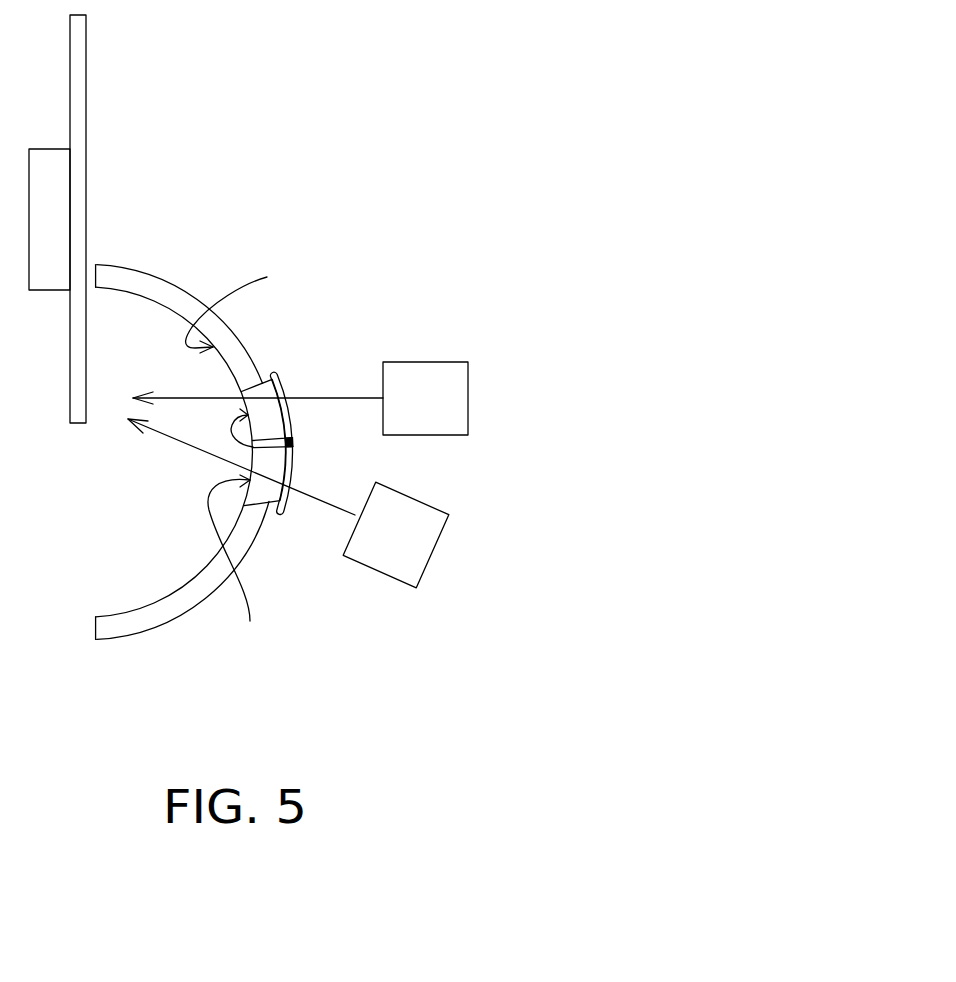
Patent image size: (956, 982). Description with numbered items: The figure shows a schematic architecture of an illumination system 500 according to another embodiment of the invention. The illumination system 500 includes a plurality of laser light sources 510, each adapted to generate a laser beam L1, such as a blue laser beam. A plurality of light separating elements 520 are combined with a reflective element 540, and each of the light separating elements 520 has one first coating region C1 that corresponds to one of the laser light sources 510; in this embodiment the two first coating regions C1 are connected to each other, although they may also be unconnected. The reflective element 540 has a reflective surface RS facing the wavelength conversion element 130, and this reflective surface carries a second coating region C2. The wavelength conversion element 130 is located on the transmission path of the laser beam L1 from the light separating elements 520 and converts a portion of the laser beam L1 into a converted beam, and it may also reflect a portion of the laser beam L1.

The illumination system 500 is at (480, 75).
The wavelength conversion element 130 is at (80, 50).
The reflective element 540 is at (172, 297).
The light separating elements 520 is at (272, 388).
The laser light sources 510 is at (450, 398).
The laser beam L1 is at (197, 398).
The first coating region C1 is at (292, 448).
The second coating region C2 is at (274, 302).